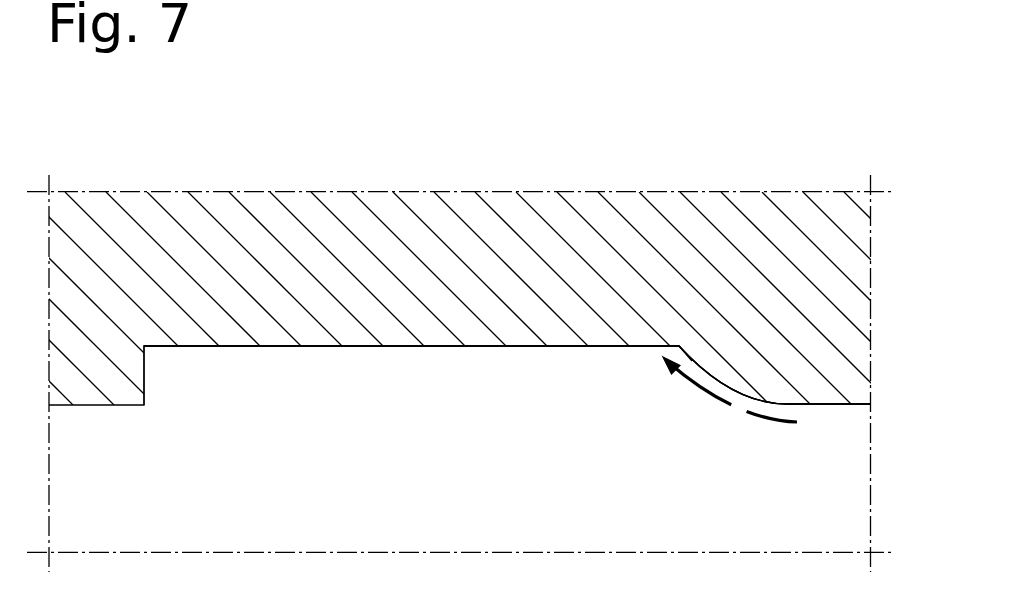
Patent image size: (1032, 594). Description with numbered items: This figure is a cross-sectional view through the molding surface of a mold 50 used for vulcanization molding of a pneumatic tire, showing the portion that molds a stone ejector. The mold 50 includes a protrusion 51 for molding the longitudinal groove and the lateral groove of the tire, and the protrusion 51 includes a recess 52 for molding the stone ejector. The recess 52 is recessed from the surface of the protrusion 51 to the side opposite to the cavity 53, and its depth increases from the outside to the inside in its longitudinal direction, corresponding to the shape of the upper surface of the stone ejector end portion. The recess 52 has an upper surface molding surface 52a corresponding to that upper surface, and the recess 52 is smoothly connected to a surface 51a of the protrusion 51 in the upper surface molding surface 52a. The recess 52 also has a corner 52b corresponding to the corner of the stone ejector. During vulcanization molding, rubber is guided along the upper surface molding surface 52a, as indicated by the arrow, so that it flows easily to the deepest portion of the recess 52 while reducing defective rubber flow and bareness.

The mold 50 is at (764, 165).
The protrusion 51 is at (860, 389).
The surface of the protrusion 51a is at (833, 405).
The recess 52 is at (266, 424).
The upper surface molding surface 52a is at (745, 400).
The corner 52b is at (664, 351).
The cavity 53 is at (400, 493).